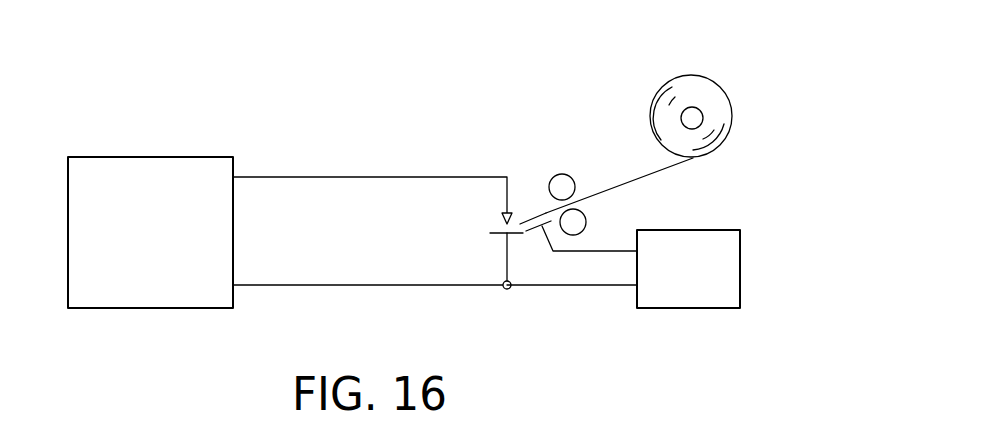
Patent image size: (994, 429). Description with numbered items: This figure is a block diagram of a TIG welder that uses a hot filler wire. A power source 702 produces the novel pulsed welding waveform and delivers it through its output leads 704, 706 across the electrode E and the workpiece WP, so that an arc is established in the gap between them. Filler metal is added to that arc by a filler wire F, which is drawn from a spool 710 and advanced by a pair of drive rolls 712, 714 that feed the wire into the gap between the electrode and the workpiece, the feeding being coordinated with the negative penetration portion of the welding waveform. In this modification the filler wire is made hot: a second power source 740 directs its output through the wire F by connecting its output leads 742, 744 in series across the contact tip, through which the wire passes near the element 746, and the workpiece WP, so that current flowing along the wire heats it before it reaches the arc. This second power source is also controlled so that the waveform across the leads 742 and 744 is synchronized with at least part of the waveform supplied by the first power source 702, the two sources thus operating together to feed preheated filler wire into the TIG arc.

The power source 702 is at (138, 157).
The output lead 704 is at (347, 177).
The output lead 706 is at (298, 288).
The spool 710 is at (718, 83).
The drive roll 712 is at (563, 173).
The drive roll 714 is at (584, 213).
The power source 740 is at (742, 270).
The output lead 742 is at (603, 251).
The output lead 744 is at (535, 287).
The electrode plates 746 is at (533, 210).
The electrode E is at (500, 218).
The workpiece WP is at (497, 233).
The filler wire F is at (670, 165).